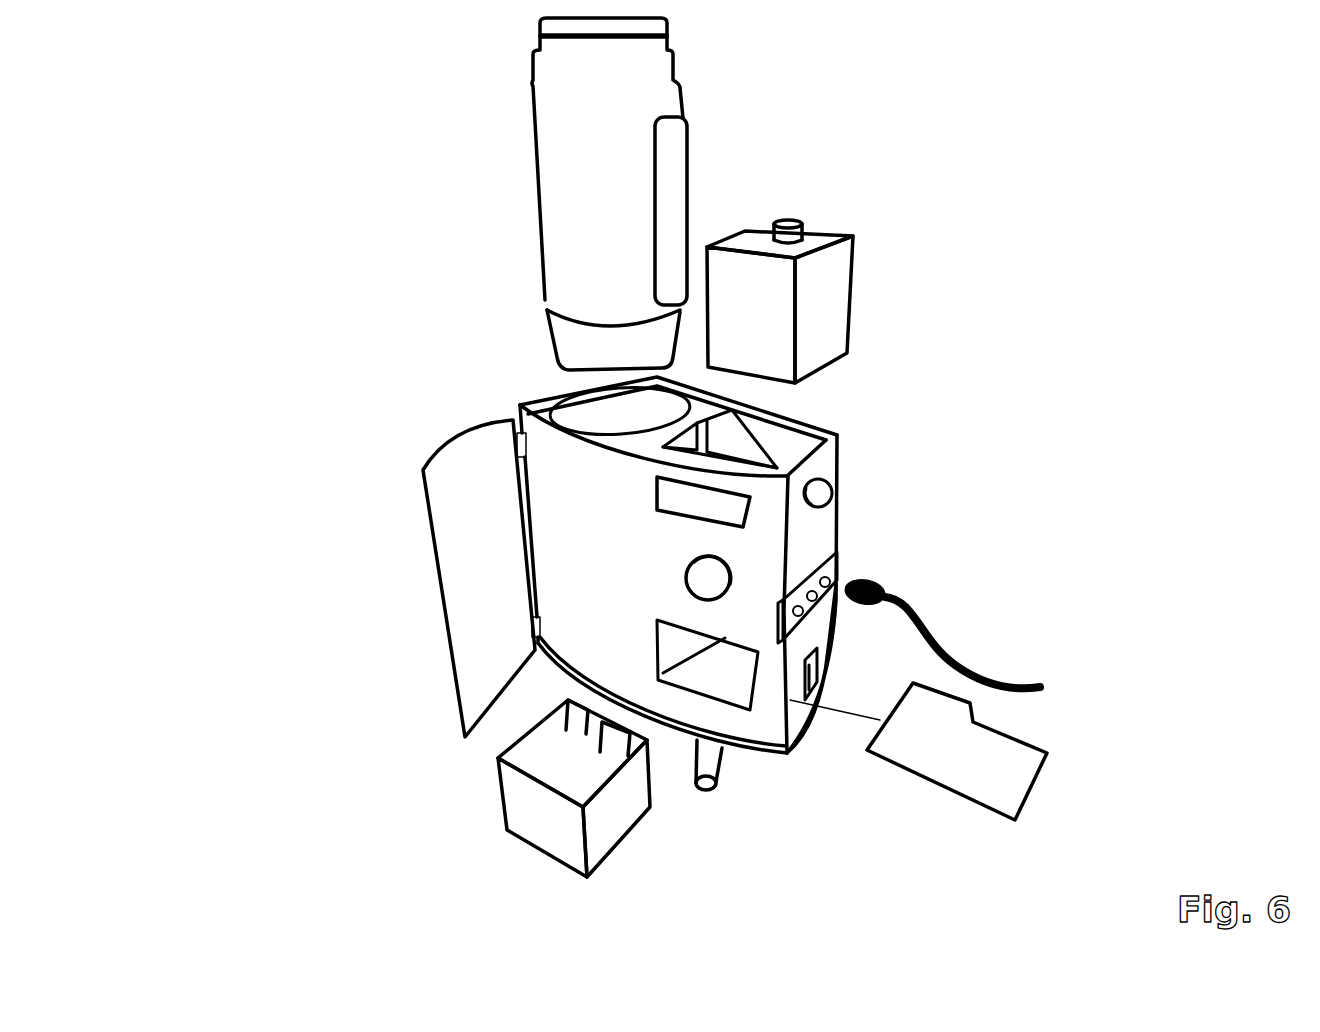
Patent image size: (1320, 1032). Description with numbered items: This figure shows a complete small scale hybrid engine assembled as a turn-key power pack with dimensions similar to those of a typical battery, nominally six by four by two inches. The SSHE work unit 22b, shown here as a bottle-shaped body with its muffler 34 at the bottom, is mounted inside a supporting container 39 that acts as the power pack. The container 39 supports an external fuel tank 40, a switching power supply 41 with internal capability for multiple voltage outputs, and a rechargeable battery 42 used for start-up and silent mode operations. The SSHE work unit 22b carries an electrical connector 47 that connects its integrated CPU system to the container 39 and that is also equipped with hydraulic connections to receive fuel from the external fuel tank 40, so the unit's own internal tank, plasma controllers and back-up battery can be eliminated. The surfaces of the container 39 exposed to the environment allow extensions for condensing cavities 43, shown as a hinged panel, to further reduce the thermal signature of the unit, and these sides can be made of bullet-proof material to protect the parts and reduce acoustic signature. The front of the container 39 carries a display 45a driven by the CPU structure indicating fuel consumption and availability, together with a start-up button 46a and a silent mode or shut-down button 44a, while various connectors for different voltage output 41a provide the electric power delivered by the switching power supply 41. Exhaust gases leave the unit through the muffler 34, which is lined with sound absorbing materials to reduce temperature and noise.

The SSHE work unit 22b is at (570, 243).
The electrical connector 47 is at (688, 173).
The external fuel tank 40 is at (822, 300).
The container 39 is at (843, 445).
The start-up button 46a is at (840, 496).
The display 45a is at (657, 490).
The silent mode or shut-down button 44a is at (686, 573).
The condensing cavity extensions 43 is at (485, 608).
The rechargeable battery 42 is at (538, 823).
The muffler 34 is at (717, 792).
The connectors for different voltage output 41a is at (1017, 677).
The switching power supply 41 is at (1017, 780).